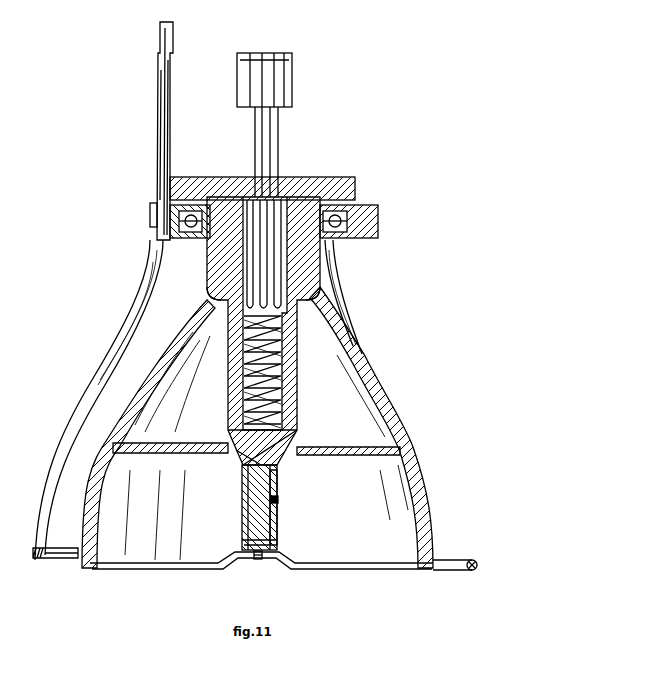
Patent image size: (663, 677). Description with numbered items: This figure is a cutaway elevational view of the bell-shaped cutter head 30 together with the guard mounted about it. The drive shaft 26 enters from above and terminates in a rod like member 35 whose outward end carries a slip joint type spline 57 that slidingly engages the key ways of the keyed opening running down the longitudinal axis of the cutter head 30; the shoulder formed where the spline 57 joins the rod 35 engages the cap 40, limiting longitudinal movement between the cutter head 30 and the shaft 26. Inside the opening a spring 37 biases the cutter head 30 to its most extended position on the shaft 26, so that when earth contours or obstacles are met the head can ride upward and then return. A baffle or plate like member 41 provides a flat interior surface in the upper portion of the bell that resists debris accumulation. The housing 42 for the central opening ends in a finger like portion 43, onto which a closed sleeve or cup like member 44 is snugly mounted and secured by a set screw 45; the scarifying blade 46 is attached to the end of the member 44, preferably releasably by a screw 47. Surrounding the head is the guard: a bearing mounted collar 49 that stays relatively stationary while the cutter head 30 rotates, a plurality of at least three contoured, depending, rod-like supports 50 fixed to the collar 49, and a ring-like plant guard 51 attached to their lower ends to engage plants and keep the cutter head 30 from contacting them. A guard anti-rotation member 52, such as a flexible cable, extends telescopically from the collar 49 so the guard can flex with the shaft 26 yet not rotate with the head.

The shaft 26 is at (286, 100).
The rod like member 35 is at (272, 160).
The cap 40 is at (338, 177).
The bearing mounted collar 49 is at (378, 210).
The rod-like supports 50 is at (72, 397).
The slip joint type spline 57 is at (277, 307).
The spring 37 is at (290, 410).
The housing 42 is at (290, 440).
The cutter head 30 is at (415, 443).
The baffle or plate like member 41 is at (175, 456).
The finger like portion 43 is at (260, 507).
The closed sleeve or cup like member 44 is at (245, 530).
The set screw 45 is at (280, 500).
The scarifying blade 46 is at (219, 568).
The screw 47 is at (255, 562).
The ring-like plant guard 51 is at (60, 560).
The guard anti-rotation member 52 is at (172, 33).